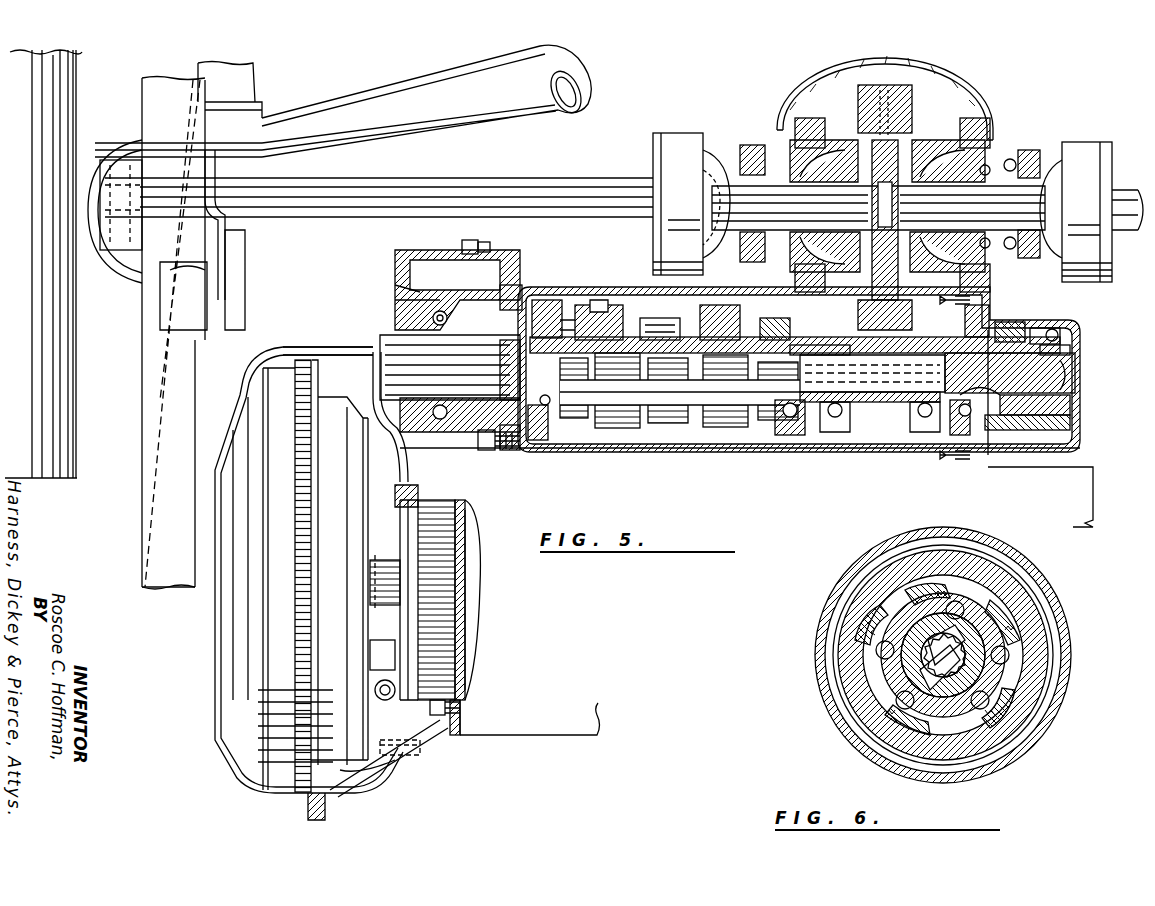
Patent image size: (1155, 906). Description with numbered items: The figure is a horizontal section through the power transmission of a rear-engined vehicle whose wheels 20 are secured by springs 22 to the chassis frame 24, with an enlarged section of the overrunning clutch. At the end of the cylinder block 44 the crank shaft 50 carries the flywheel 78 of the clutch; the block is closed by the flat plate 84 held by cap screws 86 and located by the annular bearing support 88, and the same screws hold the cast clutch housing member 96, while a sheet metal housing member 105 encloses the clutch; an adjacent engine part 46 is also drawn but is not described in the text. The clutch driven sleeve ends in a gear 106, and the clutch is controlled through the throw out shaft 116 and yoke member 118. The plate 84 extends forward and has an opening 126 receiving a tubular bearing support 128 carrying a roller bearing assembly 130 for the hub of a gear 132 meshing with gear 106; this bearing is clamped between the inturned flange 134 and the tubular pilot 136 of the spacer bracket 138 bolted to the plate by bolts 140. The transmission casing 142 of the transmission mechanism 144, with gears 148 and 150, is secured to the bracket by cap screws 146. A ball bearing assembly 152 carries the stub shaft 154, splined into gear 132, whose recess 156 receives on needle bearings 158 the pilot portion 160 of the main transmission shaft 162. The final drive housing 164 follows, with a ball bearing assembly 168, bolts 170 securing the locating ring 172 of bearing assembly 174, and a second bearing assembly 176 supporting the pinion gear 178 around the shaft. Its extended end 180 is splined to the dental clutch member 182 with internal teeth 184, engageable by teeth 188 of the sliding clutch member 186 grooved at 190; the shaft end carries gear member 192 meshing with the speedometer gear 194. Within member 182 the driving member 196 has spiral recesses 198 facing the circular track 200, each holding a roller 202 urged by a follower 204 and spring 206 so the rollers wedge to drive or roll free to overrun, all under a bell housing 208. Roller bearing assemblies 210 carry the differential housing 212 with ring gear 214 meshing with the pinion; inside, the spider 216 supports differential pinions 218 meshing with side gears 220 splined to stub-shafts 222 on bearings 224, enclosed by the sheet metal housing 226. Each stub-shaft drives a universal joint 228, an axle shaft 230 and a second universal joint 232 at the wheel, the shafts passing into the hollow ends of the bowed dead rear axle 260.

In FIG. 5, the wheels 20 is at (243, 80).
In FIG. 5, the springs 22 is at (142, 598).
In FIG. 5, the vehicle chassis frame 24 is at (142, 432).
In FIG. 5, the cylinder block 44 is at (450, 735).
In FIG. 5, the plate 46 is at (490, 705).
In FIG. 5, the crank shaft 50 is at (385, 582).
In FIG. 5, the flywheel 78 is at (313, 576).
In FIG. 5, the flat metal plate member 84 is at (470, 488).
In FIG. 5, the cap screws 86 is at (428, 706).
In FIG. 5, the annular bearing support 88 is at (465, 545).
In FIG. 5, the clutch housing member 96 is at (372, 800).
In FIG. 5, the cup-shaped sheet metal housing member 105 is at (232, 735).
In FIG. 5, the gear 106 is at (478, 582).
In FIG. 5, the clutch throw out shaft 116 is at (375, 690).
In FIG. 5, the yoke member 118 is at (372, 658).
In FIG. 5, the opening 126 is at (485, 445).
In FIG. 5, the tubular bearing support 128 is at (410, 440).
In FIG. 5, the roller bearing assembly 130 is at (378, 398).
In FIG. 5, the gear 132 is at (415, 292).
In FIG. 5, the inturned flange 134 is at (400, 310).
In FIG. 5, the tubular pilot 136 is at (430, 315).
In FIG. 5, the spacer bracket 138 is at (500, 300).
In FIG. 5, the bolts 140 is at (478, 272).
In FIG. 5, the transmission casing 142 is at (648, 290).
In FIG. 5, the transmission mechanism 144 is at (652, 323).
In FIG. 5, the cap screws 146 is at (520, 448).
In FIG. 5, the gear 148 is at (690, 312).
In FIG. 5, the gear 150 is at (712, 330).
In FIG. 5, the ball bearing assembly 152 is at (552, 314).
In FIG. 5, the stub shaft 154 is at (553, 319).
In FIG. 5, the recess 156 is at (548, 402).
In FIG. 5, the needle bearings 158 is at (548, 407).
In FIG. 5, the pilot portion 160 is at (461, 367).
In FIG. 5, the main transmission shaft 162 is at (705, 395).
In FIG. 6, the main transmission shaft 162 is at (985, 655).
In FIG. 5, the final drive housing 164 is at (780, 292).
In FIG. 5, the ball bearing assembly 168 is at (778, 330).
In FIG. 5, the bolts 170 is at (865, 440).
In FIG. 5, the locating ring 172 is at (950, 452).
In FIG. 5, the bearing assembly 174 is at (925, 440).
In FIG. 5, the second bearing assembly 176 is at (810, 440).
In FIG. 5, the pinion gear 178 is at (878, 345).
In FIG. 5, the extended end of pinion gear 180 is at (950, 348).
In FIG. 5, the dental clutch member 182 is at (995, 310).
In FIG. 6, the dental clutch member 182 is at (1003, 635).
In FIG. 5, the internal teeth 184 is at (1012, 322).
In FIG. 5, the clutch member 186 is at (1062, 338).
In FIG. 5, the teeth 188 is at (1058, 330).
In FIG. 5, the peripheral groove 190 is at (1072, 428).
In FIG. 5, the gear member 192 is at (1070, 405).
In FIG. 5, the second gear 194 is at (1070, 350).
In FIG. 5, the driving member 196 is at (950, 378).
In FIG. 6, the driving member 196 is at (965, 652).
In FIG. 6, the recesses 198 is at (975, 600).
In FIG. 6, the circular track 200 is at (870, 630).
In FIG. 6, the roller 202 is at (950, 600).
In FIG. 6, the follower 204 is at (915, 592).
In FIG. 6, the spring 206 is at (905, 620).
In FIG. 5, the bell housing 208 is at (1065, 375).
In FIG. 5, the roller bearing assemblies 210 is at (805, 150).
In FIG. 5, the differential housing 212 is at (912, 140).
In FIG. 5, the ring gear 214 is at (858, 100).
In FIG. 5, the spider 216 is at (885, 88).
In FIG. 5, the differential pinions 218 is at (985, 165).
In FIG. 5, the differential side gears 220 is at (900, 278).
In FIG. 5, the stub-shafts 222 is at (878, 220).
In FIG. 5, the bearing 224 is at (752, 144).
In FIG. 5, the sheet metal housing member 226 is at (960, 95).
In FIG. 5, the universal joint 228 is at (685, 132).
In FIG. 5, the axle shaft 230 is at (545, 190).
In FIG. 5, the second universal joint 232 is at (110, 280).
In FIG. 5, the rear axle 260 is at (490, 70).